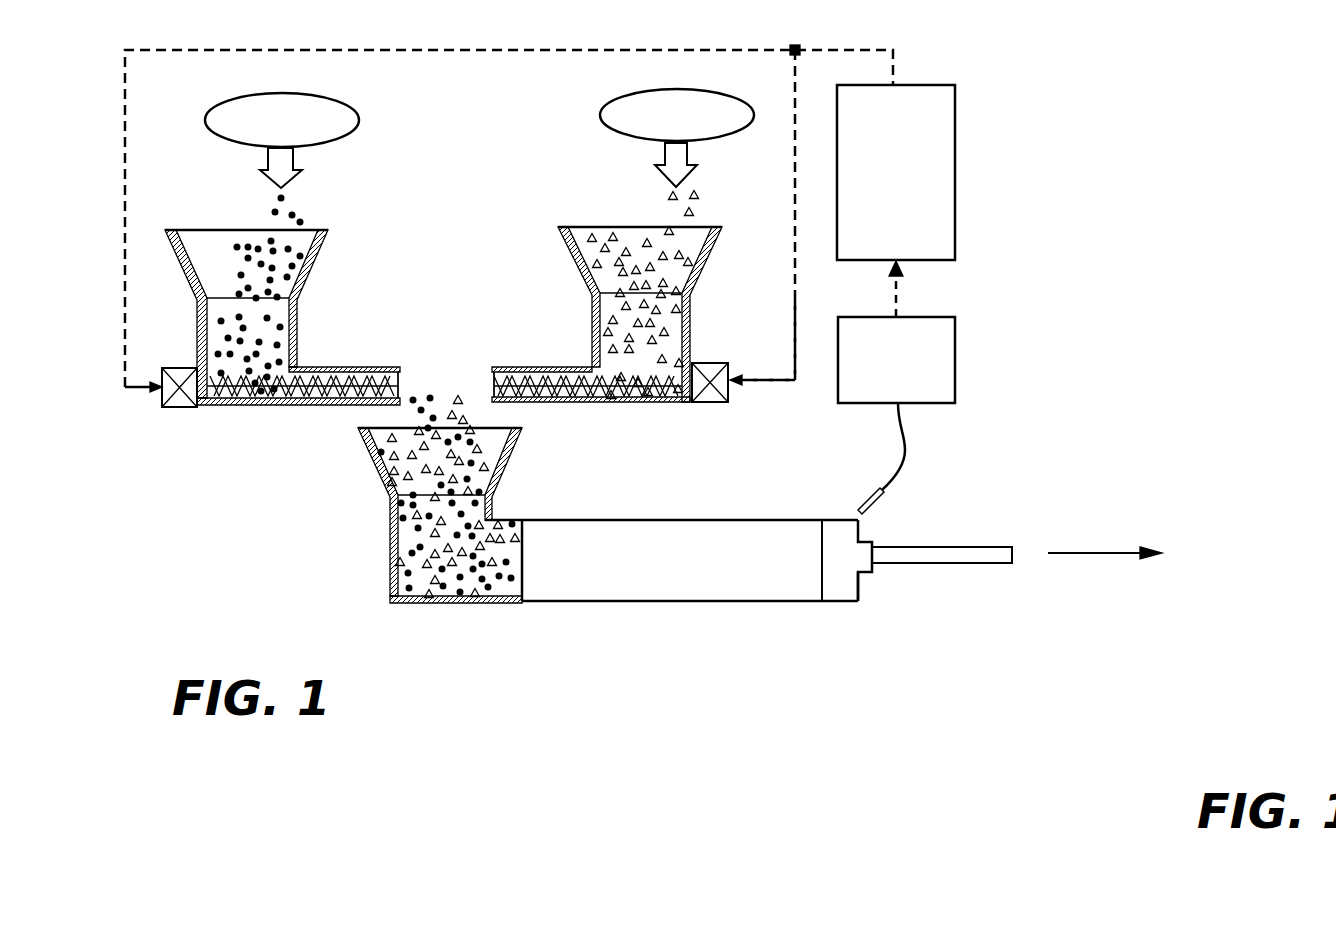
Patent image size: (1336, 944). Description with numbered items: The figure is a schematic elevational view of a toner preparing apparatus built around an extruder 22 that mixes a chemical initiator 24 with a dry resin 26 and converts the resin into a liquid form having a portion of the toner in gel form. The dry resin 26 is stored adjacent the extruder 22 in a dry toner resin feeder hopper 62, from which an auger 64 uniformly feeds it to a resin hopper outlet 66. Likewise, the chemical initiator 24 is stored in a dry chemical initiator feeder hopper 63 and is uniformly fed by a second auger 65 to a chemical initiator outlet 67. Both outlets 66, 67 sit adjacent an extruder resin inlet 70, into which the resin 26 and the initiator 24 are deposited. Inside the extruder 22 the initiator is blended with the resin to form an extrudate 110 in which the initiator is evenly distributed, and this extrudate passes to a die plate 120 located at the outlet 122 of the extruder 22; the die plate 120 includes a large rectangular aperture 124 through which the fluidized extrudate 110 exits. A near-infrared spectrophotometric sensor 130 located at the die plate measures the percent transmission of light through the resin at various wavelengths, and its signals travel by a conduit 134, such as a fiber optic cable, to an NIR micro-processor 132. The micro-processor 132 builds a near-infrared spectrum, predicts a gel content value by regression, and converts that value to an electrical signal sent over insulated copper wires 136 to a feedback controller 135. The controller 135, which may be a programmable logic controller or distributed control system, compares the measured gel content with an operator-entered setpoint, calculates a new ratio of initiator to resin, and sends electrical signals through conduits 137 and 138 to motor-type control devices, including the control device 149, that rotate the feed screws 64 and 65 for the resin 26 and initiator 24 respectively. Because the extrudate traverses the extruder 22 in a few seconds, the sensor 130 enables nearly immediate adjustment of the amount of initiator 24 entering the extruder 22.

The extruder 22 is at (657, 616).
The chemical initiator 24 is at (677, 138).
The dry resin 26 is at (282, 140).
The dry toner resin feeder hopper 62 is at (316, 266).
The dry chemical initiator feeder hopper 63 is at (692, 262).
The auger 64 is at (266, 405).
The auger 65 is at (590, 403).
The resin hopper outlet 66 is at (398, 377).
The chemical initiator outlet 67 is at (492, 377).
The extruder resin inlet 70 is at (388, 480).
The extrudate 110 is at (970, 545).
The die plate 120 is at (841, 610).
The outlet 122 is at (862, 527).
The aperture 124 is at (865, 575).
The near-infrared spectrophotometric sensor 130 is at (866, 497).
The NIR micro-processor 132 is at (896, 360).
The conduit 134 is at (906, 440).
The feedback controller 135 is at (896, 172).
The insulated copper wires 136 is at (902, 288).
The conduit 137 is at (125, 368).
The conduit 138 is at (748, 392).
The control device 149 is at (708, 362).